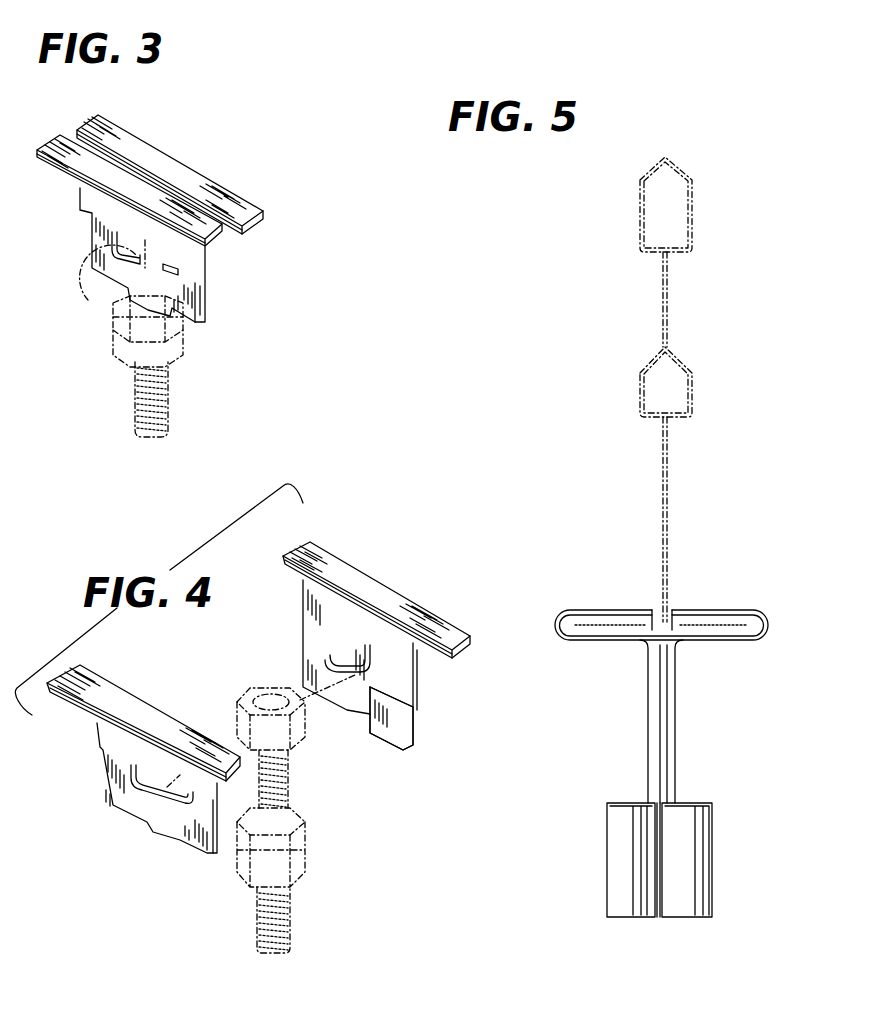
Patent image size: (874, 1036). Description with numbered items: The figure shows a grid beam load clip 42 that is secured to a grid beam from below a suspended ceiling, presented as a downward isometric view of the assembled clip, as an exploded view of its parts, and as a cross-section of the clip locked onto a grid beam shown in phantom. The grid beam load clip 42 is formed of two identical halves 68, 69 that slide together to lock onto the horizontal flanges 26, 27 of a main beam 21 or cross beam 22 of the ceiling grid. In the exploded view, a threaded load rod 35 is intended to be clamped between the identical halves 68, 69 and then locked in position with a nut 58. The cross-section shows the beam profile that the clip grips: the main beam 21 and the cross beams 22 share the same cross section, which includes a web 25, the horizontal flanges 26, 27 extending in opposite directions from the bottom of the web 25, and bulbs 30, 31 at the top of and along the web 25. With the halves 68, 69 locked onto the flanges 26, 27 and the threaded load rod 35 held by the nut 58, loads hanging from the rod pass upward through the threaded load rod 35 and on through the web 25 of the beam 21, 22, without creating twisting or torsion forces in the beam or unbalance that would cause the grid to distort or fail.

In FIG. 3, the grid beam load clip 42 is at (259, 217).
In FIG. 4, the grid beam load clip 42 is at (83, 703).
In FIG. 5, the grid beam load clip 42 is at (623, 617).
In FIG. 3, the nut 58 is at (118, 316).
In FIG. 4, the nut 58 is at (253, 690).
In FIG. 3, the threaded load rod 35 is at (170, 395).
In FIG. 4, the threaded load rod 35 is at (290, 914).
In FIG. 4, the identical half 69 is at (200, 853).
In FIG. 4, the identical half 68 is at (413, 680).
In FIG. 5, the bulb 30 is at (640, 215).
In FIG. 5, the bulb 31 is at (653, 362).
In FIG. 5, the main beam 21 is at (601, 437).
In FIG. 5, the cross beam 22 is at (660, 460).
In FIG. 5, the web 25 is at (668, 508).
In FIG. 5, the horizontal flange 27 is at (603, 632).
In FIG. 5, the horizontal flange 26 is at (718, 632).